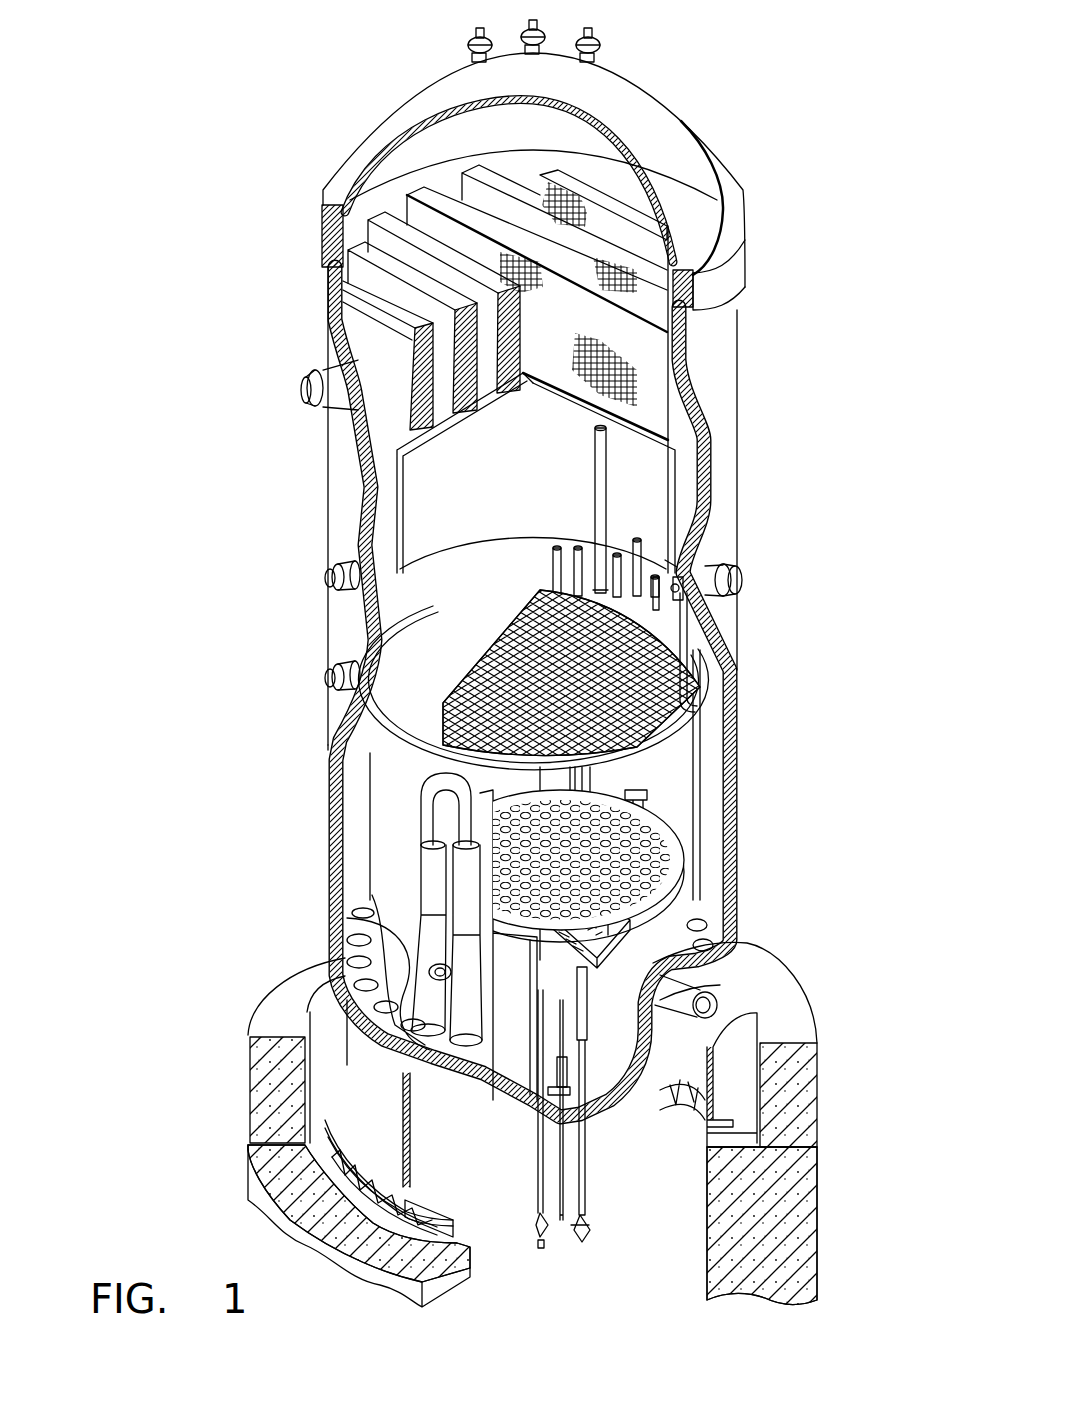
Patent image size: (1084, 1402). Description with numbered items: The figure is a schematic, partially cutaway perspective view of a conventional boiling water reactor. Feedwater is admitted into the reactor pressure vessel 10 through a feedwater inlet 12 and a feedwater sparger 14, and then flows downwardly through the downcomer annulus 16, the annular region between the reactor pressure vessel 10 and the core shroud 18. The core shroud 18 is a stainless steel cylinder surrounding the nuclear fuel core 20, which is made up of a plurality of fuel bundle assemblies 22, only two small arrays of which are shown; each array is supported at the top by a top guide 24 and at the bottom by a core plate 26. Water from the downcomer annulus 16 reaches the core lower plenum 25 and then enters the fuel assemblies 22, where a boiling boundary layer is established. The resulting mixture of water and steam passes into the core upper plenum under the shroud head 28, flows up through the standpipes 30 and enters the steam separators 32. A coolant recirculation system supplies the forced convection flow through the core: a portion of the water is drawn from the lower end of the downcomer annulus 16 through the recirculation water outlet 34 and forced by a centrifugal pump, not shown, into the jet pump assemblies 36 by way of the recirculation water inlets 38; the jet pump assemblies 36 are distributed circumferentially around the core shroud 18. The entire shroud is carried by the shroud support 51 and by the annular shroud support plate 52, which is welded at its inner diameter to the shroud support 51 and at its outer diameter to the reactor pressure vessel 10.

The reactor pressure vessel 10 is at (329, 883).
The feedwater inlet 12 is at (742, 583).
The feedwater sparger 14 is at (690, 590).
The downcomer annulus 16 is at (352, 853).
The core shroud 18 is at (380, 752).
The nuclear fuel core 20 is at (665, 797).
The fuel bundle assemblies 22 is at (597, 782).
The top guide 24 is at (665, 658).
The core lower plenum 25 is at (620, 1033).
The core plate 26 is at (683, 857).
The shroud head 28 is at (481, 547).
The standpipes 30 is at (643, 547).
The steam separators 32 is at (600, 452).
The recirculation water outlet 34 is at (712, 1002).
The jet pump assemblies 36 is at (410, 835).
The recirculation water inlets 38 is at (483, 997).
The shroud support 51 is at (383, 937).
The annular shroud support plate 52 is at (340, 947).